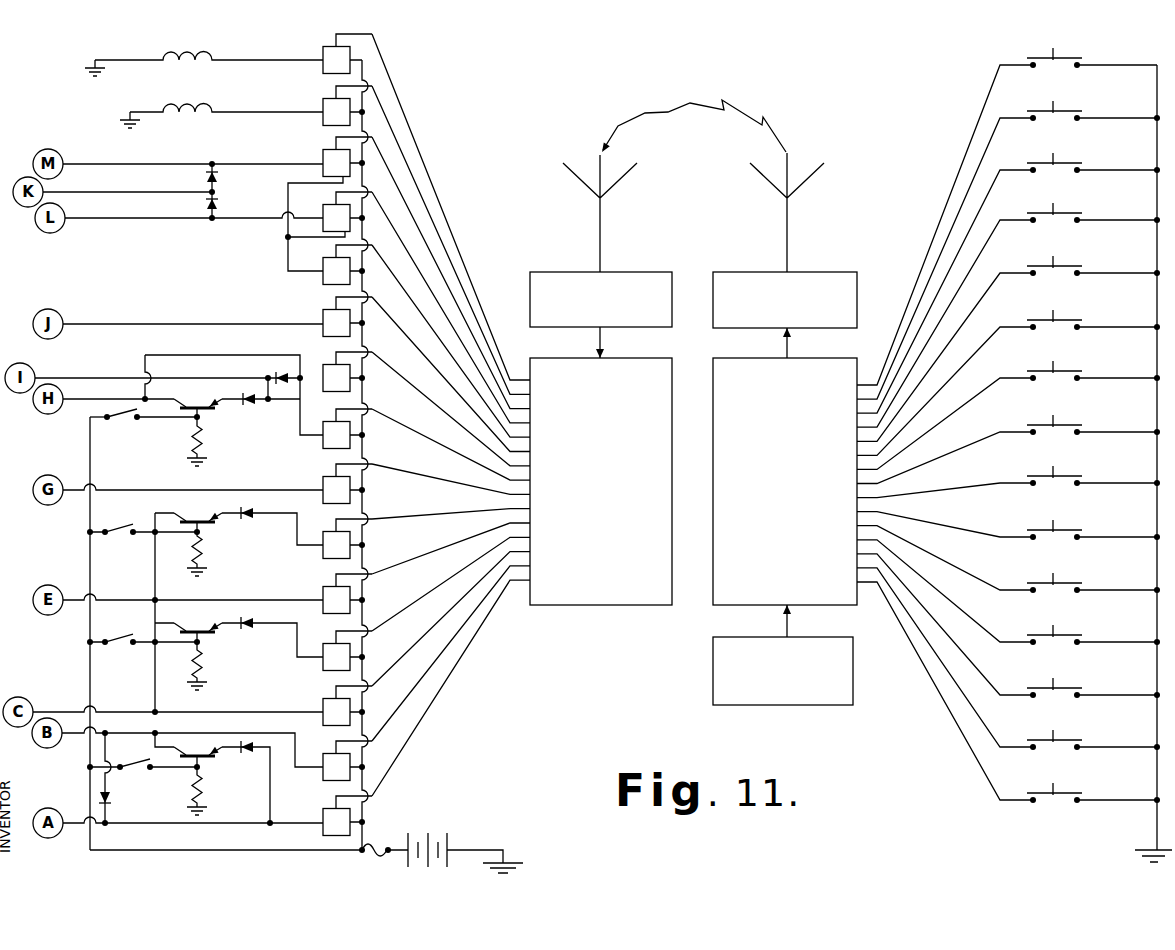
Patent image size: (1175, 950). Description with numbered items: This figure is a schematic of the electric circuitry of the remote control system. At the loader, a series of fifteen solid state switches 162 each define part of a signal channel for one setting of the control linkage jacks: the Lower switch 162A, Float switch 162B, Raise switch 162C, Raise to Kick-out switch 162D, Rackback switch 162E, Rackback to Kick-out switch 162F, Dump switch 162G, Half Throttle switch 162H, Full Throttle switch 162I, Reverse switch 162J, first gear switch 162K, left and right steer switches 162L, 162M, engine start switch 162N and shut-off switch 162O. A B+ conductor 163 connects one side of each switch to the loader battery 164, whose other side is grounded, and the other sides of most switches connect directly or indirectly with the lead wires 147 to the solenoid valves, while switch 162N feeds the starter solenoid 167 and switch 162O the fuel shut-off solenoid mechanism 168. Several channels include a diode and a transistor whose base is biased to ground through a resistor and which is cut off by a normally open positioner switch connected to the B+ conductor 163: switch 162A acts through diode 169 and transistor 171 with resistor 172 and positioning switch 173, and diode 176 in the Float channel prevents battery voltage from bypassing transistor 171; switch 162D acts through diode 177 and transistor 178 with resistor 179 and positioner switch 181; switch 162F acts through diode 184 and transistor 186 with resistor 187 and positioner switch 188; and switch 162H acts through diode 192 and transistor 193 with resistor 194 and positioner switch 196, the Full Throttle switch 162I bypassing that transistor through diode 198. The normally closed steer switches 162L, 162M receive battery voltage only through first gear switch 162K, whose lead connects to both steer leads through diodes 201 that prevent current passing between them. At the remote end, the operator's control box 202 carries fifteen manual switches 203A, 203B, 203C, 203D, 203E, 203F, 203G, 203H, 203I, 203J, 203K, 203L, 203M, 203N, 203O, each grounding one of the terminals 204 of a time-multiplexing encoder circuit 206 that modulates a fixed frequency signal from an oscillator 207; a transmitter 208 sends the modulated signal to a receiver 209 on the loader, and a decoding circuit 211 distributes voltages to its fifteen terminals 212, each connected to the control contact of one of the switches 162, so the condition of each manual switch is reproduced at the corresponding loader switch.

The lead wires 147 is at (78, 486).
The solid state switches 162 is at (312, 862).
The Lower switch 162A is at (332, 822).
The Float switch 162B is at (338, 767).
The Raise switch 162C is at (338, 712).
The Raise to Kick-out switch 162D is at (338, 660).
The Rackback switch 162E is at (338, 595).
The Rackback to Kick-out switch 162F is at (338, 540).
The Dump switch 162G is at (338, 485).
The Half Throttle switch 162H is at (338, 430).
The Full Throttle switch 162I is at (338, 385).
The Reverse switch 162J is at (322, 320).
The first gear switch 162K is at (323, 277).
The left steer switch 162L is at (338, 218).
The right steer switch 162M is at (325, 160).
The engine start switch 162N is at (330, 110).
The shut-off switch 162O is at (322, 53).
The B+ conductor 163 is at (166, 851).
The loader battery 164 is at (418, 838).
The starter solenoid 167 is at (183, 98).
The solenoid mechanism 168 is at (172, 50).
The diode 169 is at (236, 749).
The transistor 171 is at (200, 752).
The resistor 172 is at (203, 790).
The positioning switch 173 is at (122, 769).
The diode 176 is at (103, 800).
The diode 177 is at (246, 621).
The transistor 178 is at (214, 633).
The resistor 179 is at (206, 672).
The positioner switch 181 is at (102, 648).
The diode 184 is at (246, 512).
The transistor 186 is at (214, 523).
The resistor 187 is at (206, 562).
The positioner switch 188 is at (100, 537).
The diode 192 is at (248, 402).
The transistor 193 is at (197, 406).
The resistor 194 is at (206, 443).
The positioner switch 196 is at (107, 432).
The diode 198 is at (285, 375).
The diodes 201 is at (215, 192).
The operator's control box 202 is at (862, 778).
The manual switch 203A is at (1070, 797).
The manual switch 203B is at (1070, 744).
The manual switch 203C is at (1070, 692).
The manual switch 203D is at (1070, 639).
The manual switch 203E is at (1070, 587).
The manual switch 203F is at (1070, 534).
The manual switch 203G is at (1070, 480).
The manual switch 203H is at (1070, 429).
The manual switch 203I is at (1070, 375).
The manual switch 203J is at (1070, 324).
The manual switch 203K is at (1070, 270).
The manual switch 203L is at (1070, 217).
The manual switch 203M is at (1070, 167).
The manual switch 203N is at (1070, 115).
The manual switch 203O is at (1070, 62).
The terminals 204 is at (857, 578).
The encoder circuit 206 is at (800, 422).
The oscillator 207 is at (780, 705).
The transmitter 208 is at (820, 272).
The receiver 209 is at (614, 272).
The decoding circuit 211 is at (609, 557).
The terminals 212 is at (530, 558).